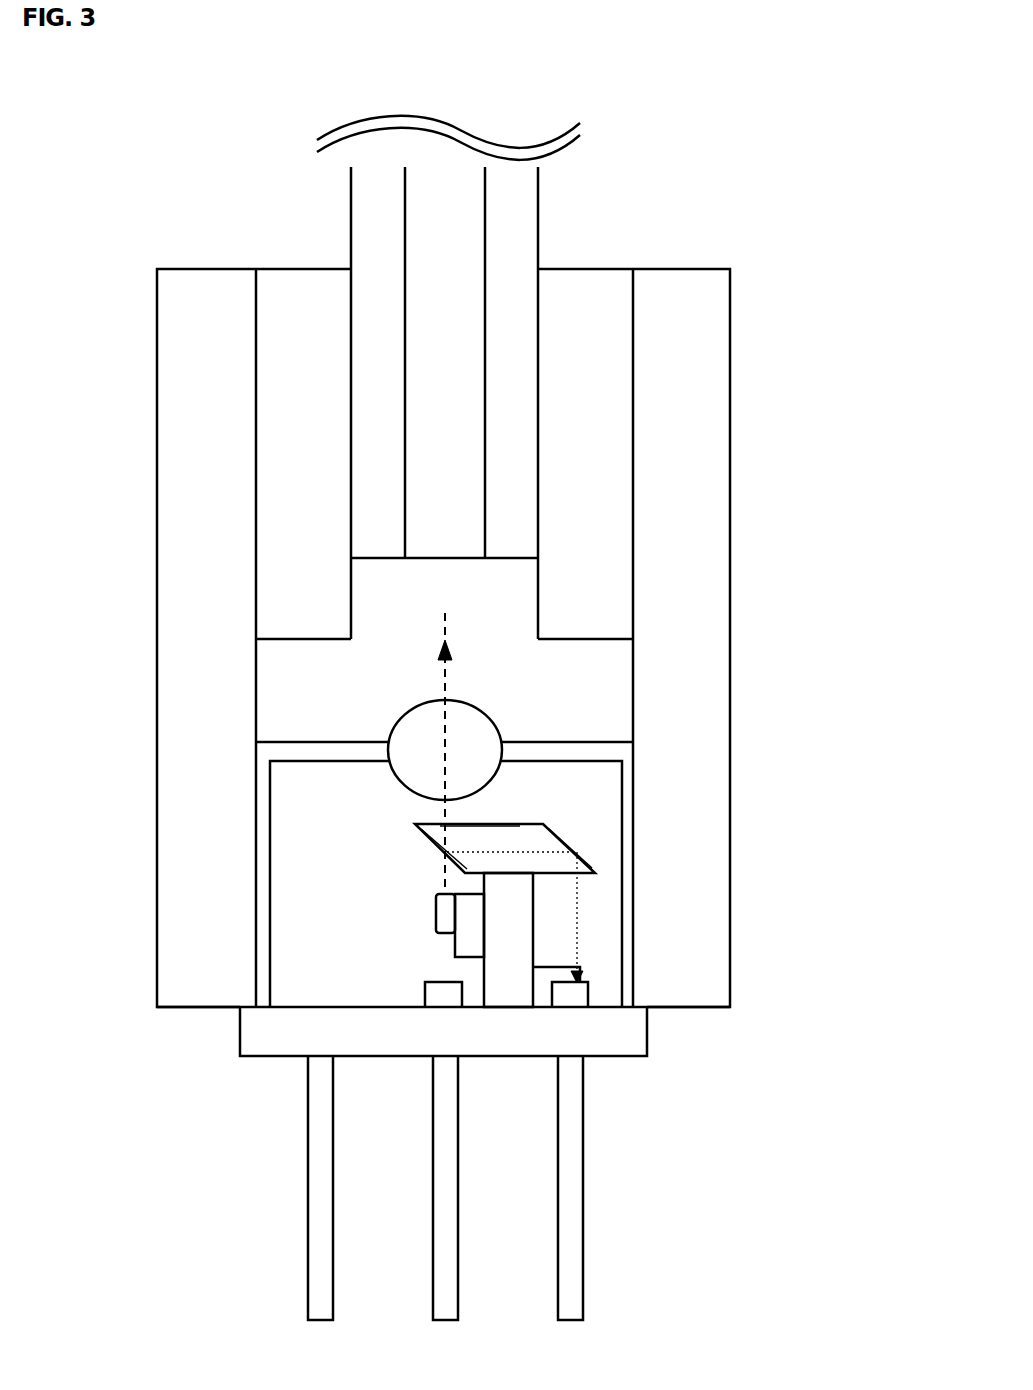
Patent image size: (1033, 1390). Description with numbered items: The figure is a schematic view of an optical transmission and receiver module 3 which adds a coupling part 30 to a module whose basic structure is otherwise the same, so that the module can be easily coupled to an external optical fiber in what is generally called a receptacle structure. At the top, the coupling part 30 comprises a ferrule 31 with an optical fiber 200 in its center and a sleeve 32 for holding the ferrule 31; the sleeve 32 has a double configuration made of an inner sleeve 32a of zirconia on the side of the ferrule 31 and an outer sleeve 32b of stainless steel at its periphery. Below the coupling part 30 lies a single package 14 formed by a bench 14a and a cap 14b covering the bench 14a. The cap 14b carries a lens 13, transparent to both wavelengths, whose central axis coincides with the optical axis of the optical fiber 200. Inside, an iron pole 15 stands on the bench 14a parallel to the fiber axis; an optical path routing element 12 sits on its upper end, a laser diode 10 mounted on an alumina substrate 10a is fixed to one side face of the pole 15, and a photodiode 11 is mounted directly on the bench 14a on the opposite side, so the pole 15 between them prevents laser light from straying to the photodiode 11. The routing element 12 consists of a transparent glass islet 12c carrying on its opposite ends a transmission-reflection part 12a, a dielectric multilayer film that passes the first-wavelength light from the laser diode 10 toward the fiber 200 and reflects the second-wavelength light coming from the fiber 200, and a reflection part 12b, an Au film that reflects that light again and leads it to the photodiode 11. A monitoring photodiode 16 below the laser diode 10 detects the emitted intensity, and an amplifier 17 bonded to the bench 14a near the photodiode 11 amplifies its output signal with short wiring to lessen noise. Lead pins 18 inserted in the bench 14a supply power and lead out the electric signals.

The optical transmission and receiver module 3 is at (760, 572).
The laser diode 10 is at (430, 1010).
The substrate 10a is at (464, 943).
The photodiode 11 is at (567, 1000).
The optical path routing element 12 is at (494, 918).
The transmission-reflection part 12a is at (415, 828).
The reflection part 12b is at (560, 828).
The islet 12c is at (522, 767).
The lens 13 is at (488, 713).
The package 14 is at (494, 908).
The bench 14a is at (638, 1043).
The cap 14b is at (628, 967).
The pole 15 is at (505, 995).
The monitoring photodiode 16 is at (437, 1000).
The amplifier 17 is at (580, 967).
The lead pins 18 is at (327, 1287).
The coupling part 30 is at (515, 552).
The ferrule 31 is at (511, 208).
The sleeve 32 is at (486, 582).
The inner sleeve 32a is at (567, 287).
The outer sleeve 32b is at (667, 287).
The optical fiber 200 is at (435, 415).